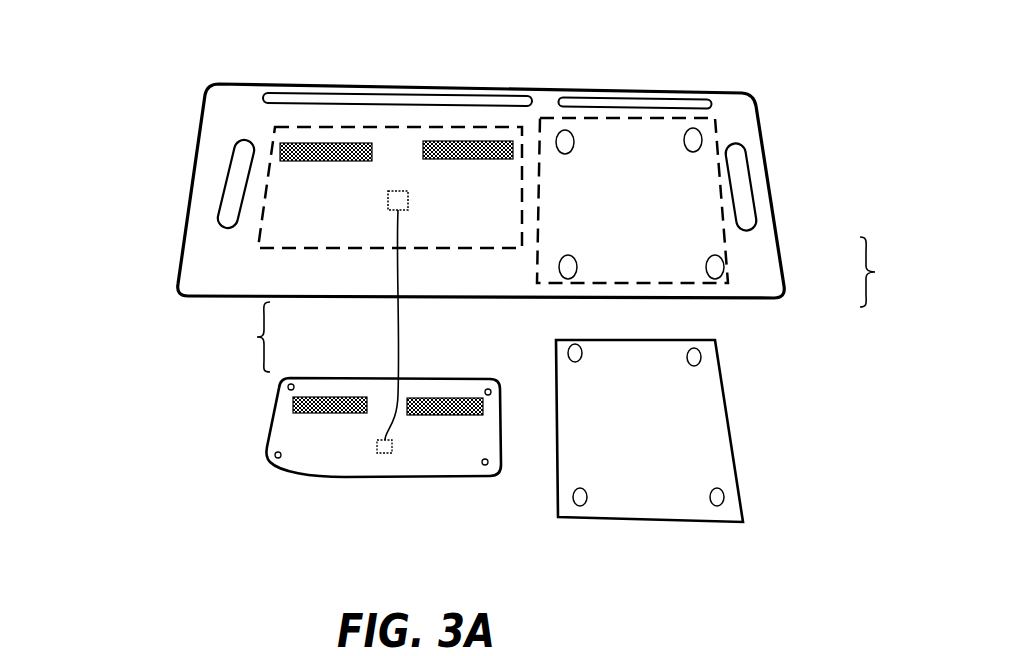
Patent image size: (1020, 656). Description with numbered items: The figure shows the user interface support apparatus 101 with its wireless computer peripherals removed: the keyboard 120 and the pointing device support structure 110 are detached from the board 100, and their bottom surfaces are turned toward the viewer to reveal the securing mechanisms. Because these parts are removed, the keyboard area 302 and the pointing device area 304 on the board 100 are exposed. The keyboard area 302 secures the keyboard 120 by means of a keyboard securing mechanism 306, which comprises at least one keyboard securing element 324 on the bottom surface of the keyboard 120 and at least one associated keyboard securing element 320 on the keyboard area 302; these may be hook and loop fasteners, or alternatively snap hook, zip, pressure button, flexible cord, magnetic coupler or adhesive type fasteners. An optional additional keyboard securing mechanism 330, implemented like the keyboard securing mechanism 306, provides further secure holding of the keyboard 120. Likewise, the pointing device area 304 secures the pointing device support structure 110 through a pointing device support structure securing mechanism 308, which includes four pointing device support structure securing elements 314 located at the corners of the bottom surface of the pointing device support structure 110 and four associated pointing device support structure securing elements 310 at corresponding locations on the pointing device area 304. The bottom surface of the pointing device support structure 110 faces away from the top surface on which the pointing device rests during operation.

The user interface support apparatus 101 is at (85, 51).
The board 100 is at (178, 251).
The keyboard area 302 is at (265, 185).
The pointing device area 304 is at (750, 91).
The keyboard securing mechanism 306 is at (236, 337).
The pointing device support structure securing mechanism 308 is at (894, 272).
The associated pointing device support structure securing element 310 is at (562, 131).
The pointing device support structure securing element 314 is at (580, 344).
The associated keyboard securing element 320 is at (456, 138).
The keyboard securing element 324 is at (347, 404).
The additional keyboard securing mechanism 330 is at (398, 320).
The pointing device support structure 110 is at (727, 403).
The keyboard 120 is at (272, 423).